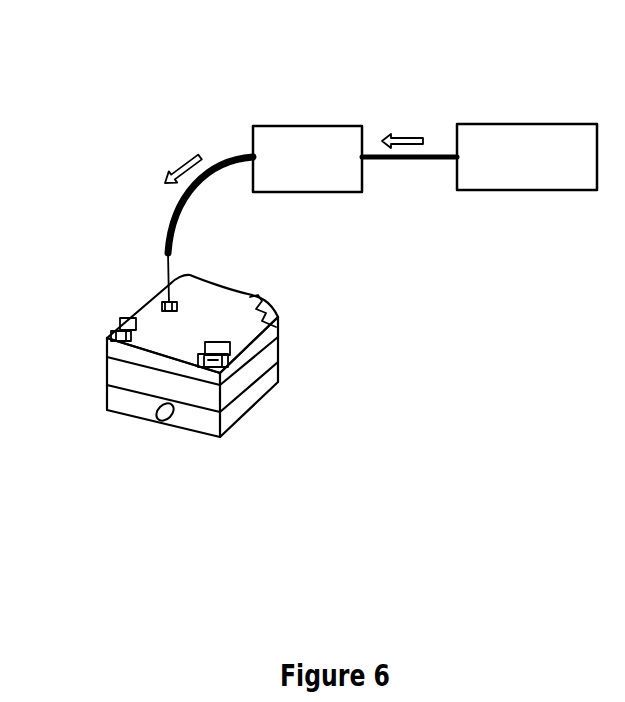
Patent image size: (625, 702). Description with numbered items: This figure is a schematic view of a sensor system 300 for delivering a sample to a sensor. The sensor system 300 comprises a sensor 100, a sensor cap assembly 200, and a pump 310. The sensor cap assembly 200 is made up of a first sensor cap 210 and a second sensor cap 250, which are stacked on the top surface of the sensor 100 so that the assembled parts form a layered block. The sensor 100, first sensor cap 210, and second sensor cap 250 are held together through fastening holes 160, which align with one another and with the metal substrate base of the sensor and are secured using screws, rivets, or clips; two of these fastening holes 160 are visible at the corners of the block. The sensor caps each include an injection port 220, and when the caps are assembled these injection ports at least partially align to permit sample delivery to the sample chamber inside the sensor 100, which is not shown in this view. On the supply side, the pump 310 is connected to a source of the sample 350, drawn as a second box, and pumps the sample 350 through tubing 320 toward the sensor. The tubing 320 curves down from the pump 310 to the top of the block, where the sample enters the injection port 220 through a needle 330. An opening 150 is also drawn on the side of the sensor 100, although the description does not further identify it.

The sensor 100 is at (278, 375).
The port 150 is at (158, 422).
The fastening holes 160 is at (120, 322).
The sensor cap assembly 200 is at (88, 352).
The first sensor cap 210 is at (278, 345).
The injection port 220 is at (170, 282).
The second sensor cap 250 is at (278, 313).
The sensor system 300 is at (205, 97).
The pump 310 is at (298, 135).
The tubing 320 is at (218, 156).
The needle 330 is at (172, 268).
The sample 350 is at (507, 142).